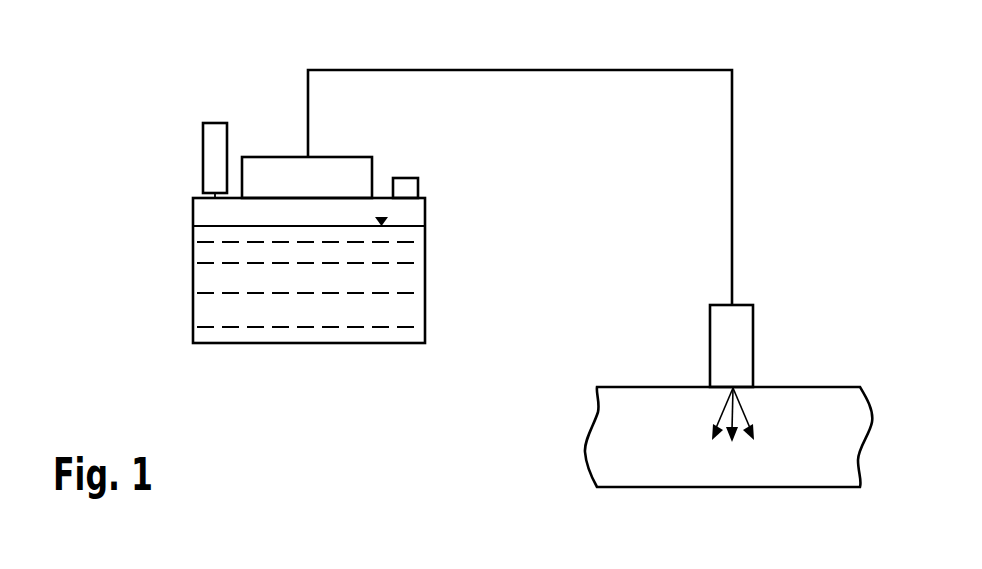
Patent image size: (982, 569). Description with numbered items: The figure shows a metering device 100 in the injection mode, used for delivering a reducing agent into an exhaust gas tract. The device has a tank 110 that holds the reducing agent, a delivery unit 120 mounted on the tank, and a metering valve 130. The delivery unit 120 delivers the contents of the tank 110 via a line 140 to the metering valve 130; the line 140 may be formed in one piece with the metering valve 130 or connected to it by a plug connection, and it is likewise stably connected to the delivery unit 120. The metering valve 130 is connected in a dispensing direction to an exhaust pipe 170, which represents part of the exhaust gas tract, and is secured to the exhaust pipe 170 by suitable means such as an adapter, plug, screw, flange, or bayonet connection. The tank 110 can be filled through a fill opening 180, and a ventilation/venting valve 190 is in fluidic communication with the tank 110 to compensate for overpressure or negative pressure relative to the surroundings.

The metering device 100 is at (389, 442).
The tank 110 is at (425, 275).
The delivery unit 120 is at (302, 177).
The metering valve 130 is at (710, 340).
The line 140 is at (540, 70).
The exhaust pipe 170 is at (815, 386).
The fill opening 180 is at (427, 171).
The ventilation/venting valve 190 is at (205, 112).